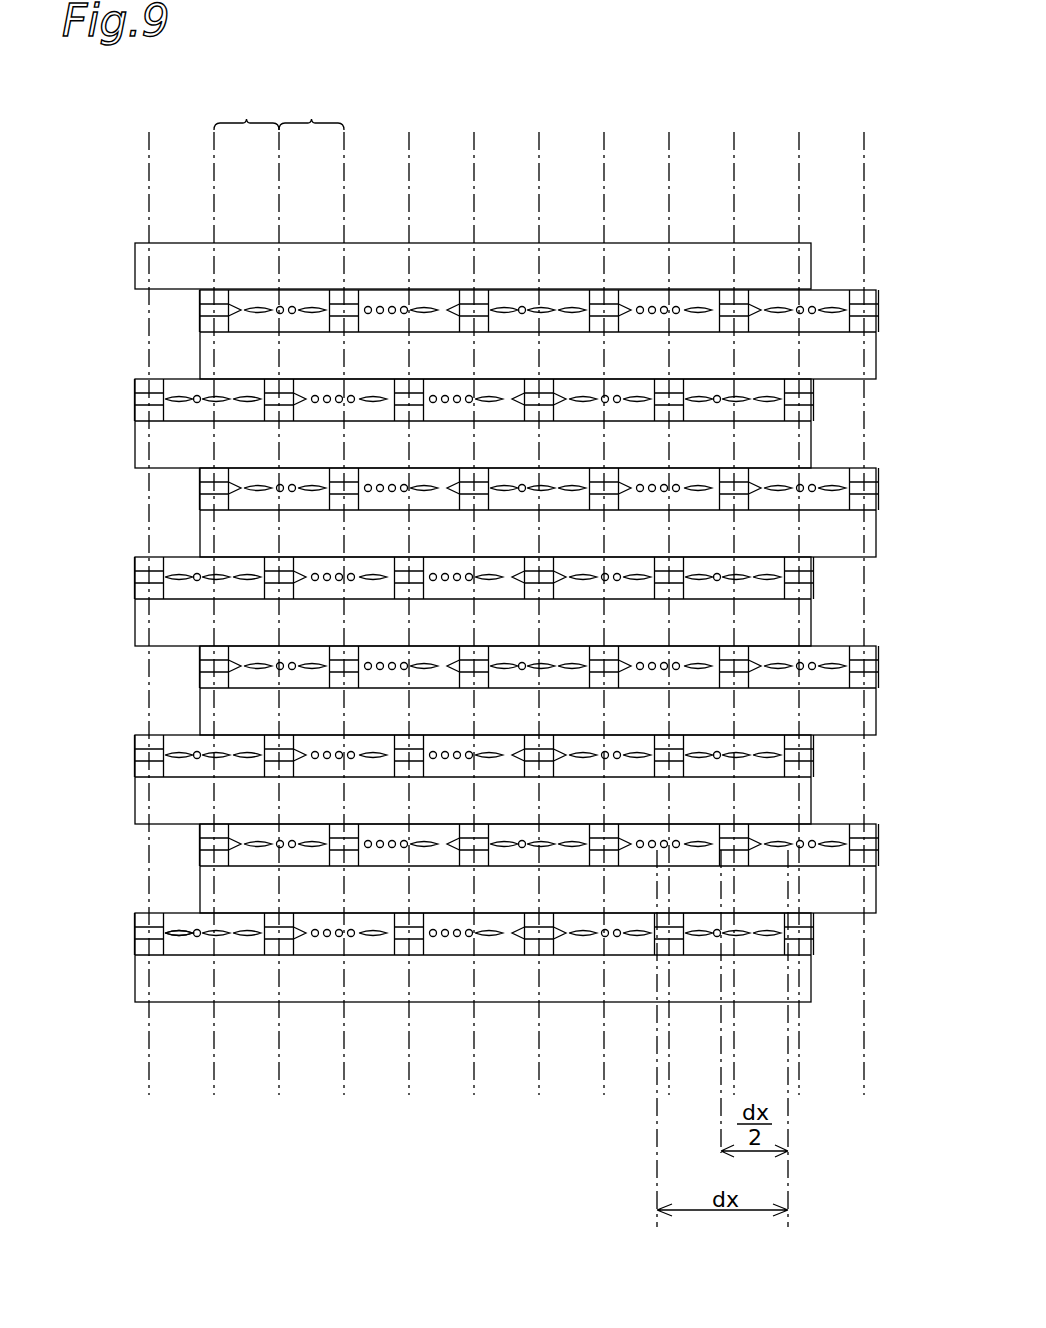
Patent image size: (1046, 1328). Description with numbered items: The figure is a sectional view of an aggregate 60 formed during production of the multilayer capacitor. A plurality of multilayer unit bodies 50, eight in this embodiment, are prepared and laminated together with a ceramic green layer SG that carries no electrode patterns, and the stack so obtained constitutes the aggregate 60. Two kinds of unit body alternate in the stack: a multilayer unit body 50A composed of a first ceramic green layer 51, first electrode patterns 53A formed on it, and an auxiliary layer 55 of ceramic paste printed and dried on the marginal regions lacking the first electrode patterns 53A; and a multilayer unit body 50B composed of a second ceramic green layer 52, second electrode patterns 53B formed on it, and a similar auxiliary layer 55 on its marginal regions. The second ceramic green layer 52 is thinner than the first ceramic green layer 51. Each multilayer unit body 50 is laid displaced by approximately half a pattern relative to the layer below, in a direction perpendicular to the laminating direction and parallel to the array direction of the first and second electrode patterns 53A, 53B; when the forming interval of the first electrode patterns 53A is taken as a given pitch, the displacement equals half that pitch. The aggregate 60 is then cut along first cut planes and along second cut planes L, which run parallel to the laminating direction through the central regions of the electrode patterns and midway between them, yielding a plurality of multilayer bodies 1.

The aggregate 60 is at (733, 75).
The second cut plane L is at (799, 163).
The multilayer body 1 is at (279, 109).
The ceramic green layer without electrode patterns SG is at (140, 247).
The multilayer unit body 50 is at (457, 761).
The first multilayer unit body 50A is at (449, 1031).
The second multilayer unit body 50B is at (92, 828).
The first ceramic green layer 51 is at (243, 987).
The second ceramic green layer 52 is at (157, 935).
The first electrode pattern 53A is at (192, 948).
The second electrode pattern 53B is at (191, 920).
The auxiliary layer 55 is at (275, 918).